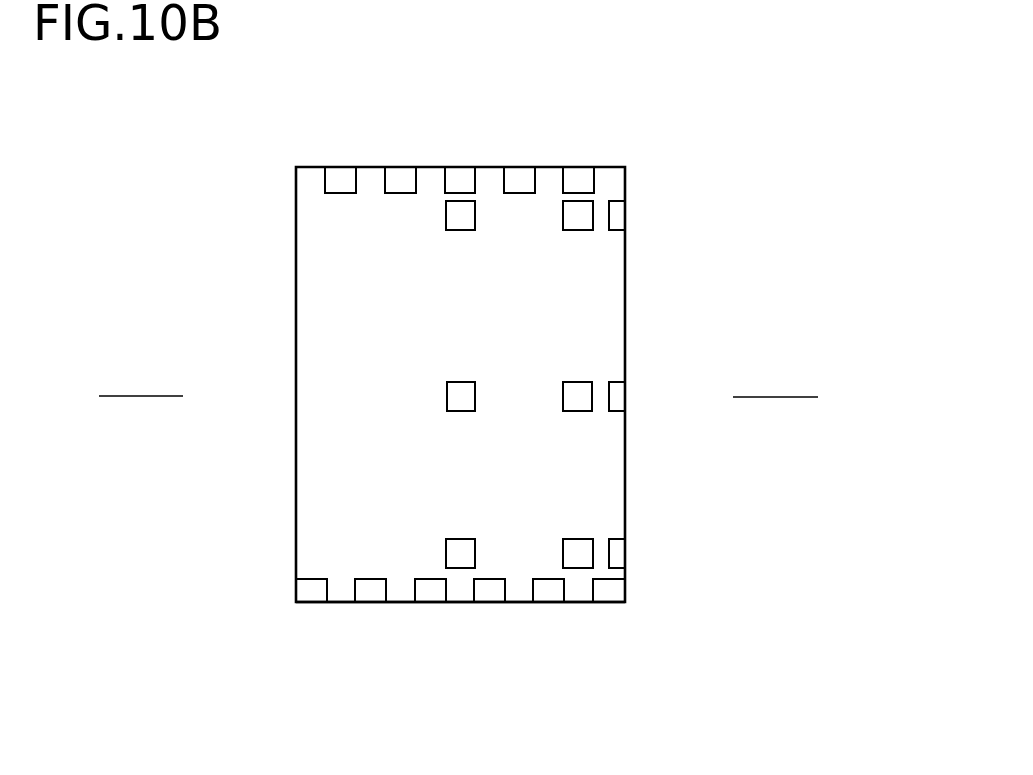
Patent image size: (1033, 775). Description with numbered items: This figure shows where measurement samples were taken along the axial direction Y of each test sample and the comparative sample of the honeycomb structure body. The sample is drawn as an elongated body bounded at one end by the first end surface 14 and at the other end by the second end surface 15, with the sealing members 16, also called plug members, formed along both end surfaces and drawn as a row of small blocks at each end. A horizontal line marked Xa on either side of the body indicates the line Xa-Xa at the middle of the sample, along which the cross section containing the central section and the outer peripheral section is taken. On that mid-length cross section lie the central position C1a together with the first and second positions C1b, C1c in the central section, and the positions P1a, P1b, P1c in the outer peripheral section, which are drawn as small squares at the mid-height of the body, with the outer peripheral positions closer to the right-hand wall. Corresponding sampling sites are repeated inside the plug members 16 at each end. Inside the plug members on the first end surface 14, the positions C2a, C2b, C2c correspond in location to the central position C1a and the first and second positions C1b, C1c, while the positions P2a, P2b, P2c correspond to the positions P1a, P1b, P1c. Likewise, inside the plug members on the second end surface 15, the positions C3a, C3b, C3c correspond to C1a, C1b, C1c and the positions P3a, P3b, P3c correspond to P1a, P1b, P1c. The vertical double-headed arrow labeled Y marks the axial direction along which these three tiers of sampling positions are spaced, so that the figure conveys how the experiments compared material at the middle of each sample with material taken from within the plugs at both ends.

The first end surface 14 is at (548, 165).
The second end surface 15 is at (531, 605).
The sealing members 16 is at (462, 177).
The sampling position C2a is at (327, 152).
The sampling position C2b is at (327, 152).
The sampling position C2c is at (327, 152).
The sampling position P2a is at (460, 215).
The sampling position P2b is at (575, 215).
The sampling position P2c is at (620, 215).
The central position C1a is at (296, 458).
The first position C1b is at (296, 458).
The second position C1c is at (296, 458).
The sampling position P1a is at (458, 393).
The sampling position P1b is at (580, 395).
The sampling position P1c is at (620, 397).
The sampling position C3a is at (347, 629).
The sampling position C3b is at (347, 629).
The sampling position C3c is at (347, 629).
The sampling position P3a is at (460, 552).
The sampling position P3b is at (578, 553).
The sampling position P3c is at (617, 552).
The line Xa- Xa is at (141, 386).
The axial direction Y is at (83, 347).